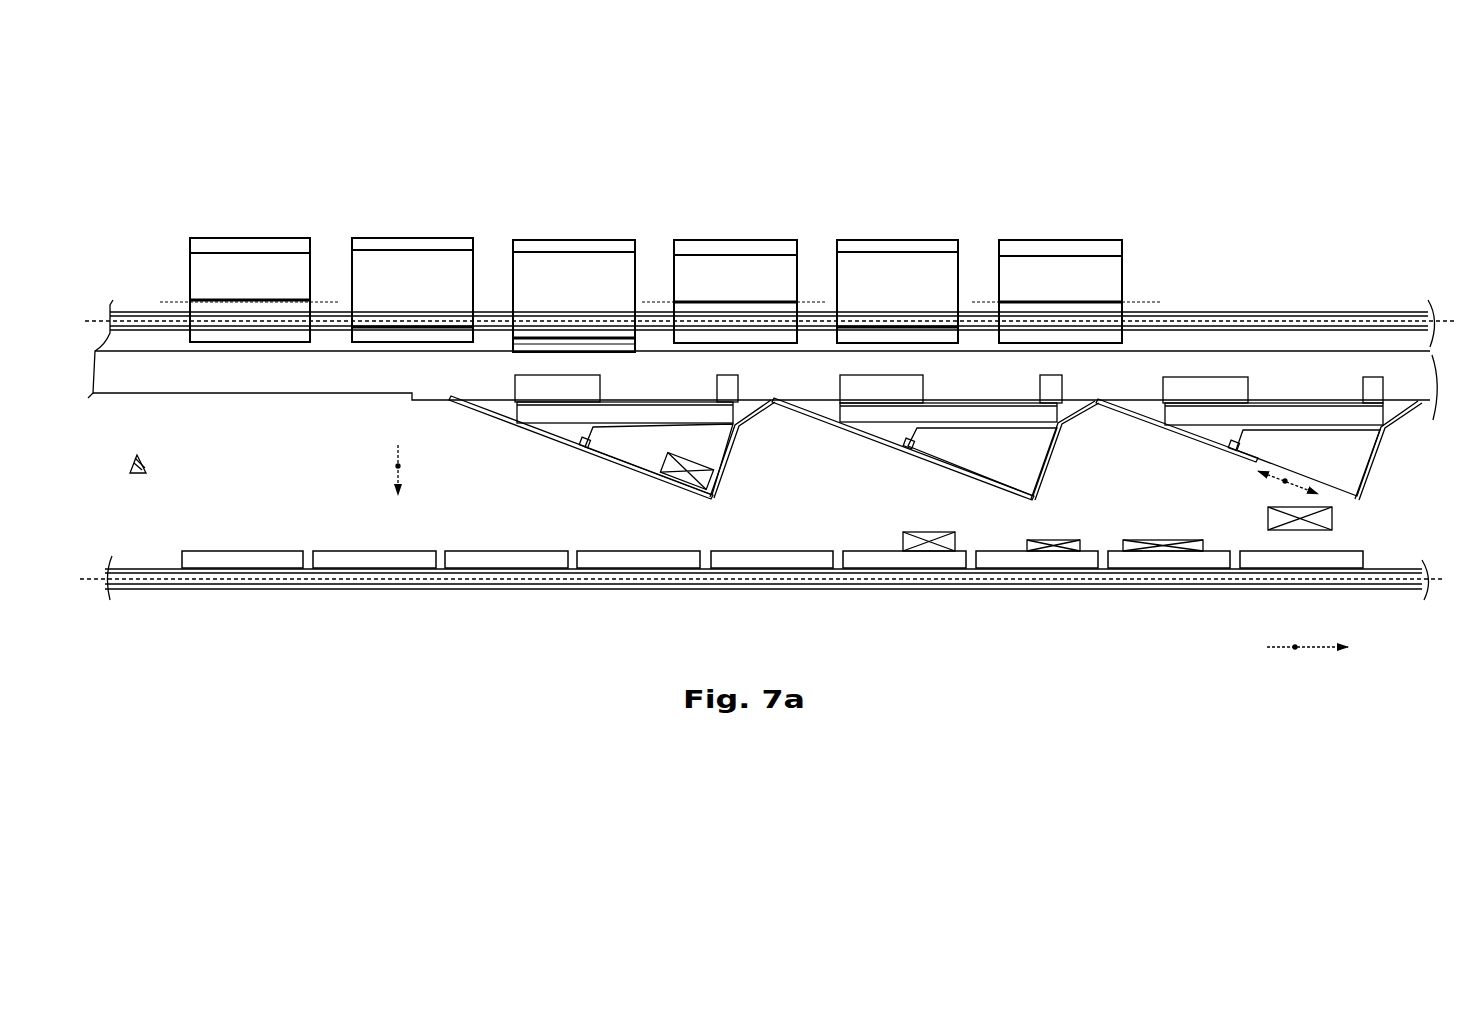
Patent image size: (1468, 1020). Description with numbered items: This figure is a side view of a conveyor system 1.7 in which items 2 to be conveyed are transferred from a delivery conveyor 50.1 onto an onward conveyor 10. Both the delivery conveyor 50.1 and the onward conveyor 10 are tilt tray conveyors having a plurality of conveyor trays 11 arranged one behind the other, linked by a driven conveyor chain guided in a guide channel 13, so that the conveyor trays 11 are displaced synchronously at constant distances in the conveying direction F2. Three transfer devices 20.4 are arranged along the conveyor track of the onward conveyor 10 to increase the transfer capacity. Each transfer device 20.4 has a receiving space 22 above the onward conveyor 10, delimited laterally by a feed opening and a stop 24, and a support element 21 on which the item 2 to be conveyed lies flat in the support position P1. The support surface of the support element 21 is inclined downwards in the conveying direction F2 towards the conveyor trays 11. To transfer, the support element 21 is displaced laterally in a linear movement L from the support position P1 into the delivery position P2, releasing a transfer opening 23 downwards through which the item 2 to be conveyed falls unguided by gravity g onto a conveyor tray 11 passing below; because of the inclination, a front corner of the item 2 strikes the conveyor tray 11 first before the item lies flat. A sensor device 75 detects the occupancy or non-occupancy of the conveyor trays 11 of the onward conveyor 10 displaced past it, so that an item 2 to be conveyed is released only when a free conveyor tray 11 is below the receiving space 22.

The conveyor system 1.7 is at (178, 221).
The delivery conveyor 50.1 is at (265, 233).
The conveyor tray 11 is at (258, 272).
The guide channel 13 is at (1278, 316).
The onward conveyor 10 is at (176, 552).
The support element 21 is at (647, 460).
The receiving space 22 is at (610, 463).
The transfer opening 23 is at (1321, 477).
The stop 24 is at (707, 472).
The transfer device 20.4 is at (620, 472).
The item to be conveyed 2 is at (718, 480).
The sensor device 75 is at (146, 458).
The gravity g is at (393, 466).
The support position P1 is at (667, 493).
The delivery position P2 is at (1347, 498).
The linear movement L is at (1283, 482).
The conveying direction F2 is at (1295, 646).